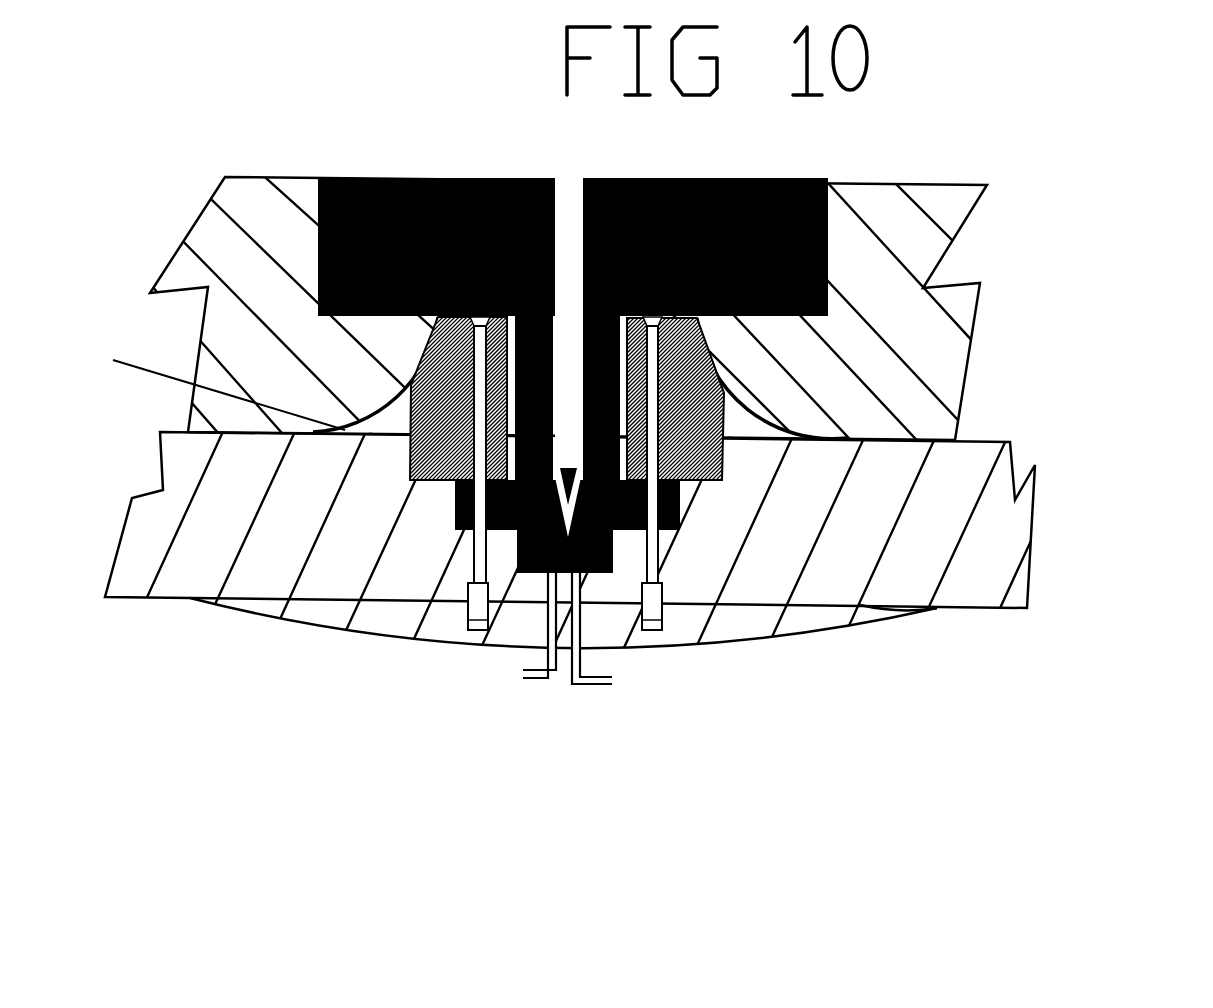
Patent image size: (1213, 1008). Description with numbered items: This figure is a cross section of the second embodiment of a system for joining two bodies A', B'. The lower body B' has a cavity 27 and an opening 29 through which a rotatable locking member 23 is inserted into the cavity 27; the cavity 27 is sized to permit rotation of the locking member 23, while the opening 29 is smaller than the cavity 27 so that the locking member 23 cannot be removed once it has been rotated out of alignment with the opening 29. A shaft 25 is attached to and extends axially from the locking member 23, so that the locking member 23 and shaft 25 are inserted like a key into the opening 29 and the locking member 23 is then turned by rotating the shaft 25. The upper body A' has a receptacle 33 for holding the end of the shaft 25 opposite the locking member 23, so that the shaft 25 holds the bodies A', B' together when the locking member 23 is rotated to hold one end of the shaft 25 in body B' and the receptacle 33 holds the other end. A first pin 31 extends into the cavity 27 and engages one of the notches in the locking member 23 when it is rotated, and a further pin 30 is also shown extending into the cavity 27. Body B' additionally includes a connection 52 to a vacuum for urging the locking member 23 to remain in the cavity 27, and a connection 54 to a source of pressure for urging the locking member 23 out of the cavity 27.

The rotatable locking member 23 is at (683, 517).
The shaft 25 is at (898, 615).
The cavity 27 is at (410, 420).
The opening 29 is at (410, 407).
The first pin 30 is at (477, 632).
The first pin 31 is at (645, 632).
The receptacle 33 is at (430, 178).
The connection to a vacuum 52 is at (540, 682).
The connection to a source of pressure 54 is at (593, 686).
The body A' is at (581, 310).
The body B' is at (610, 532).